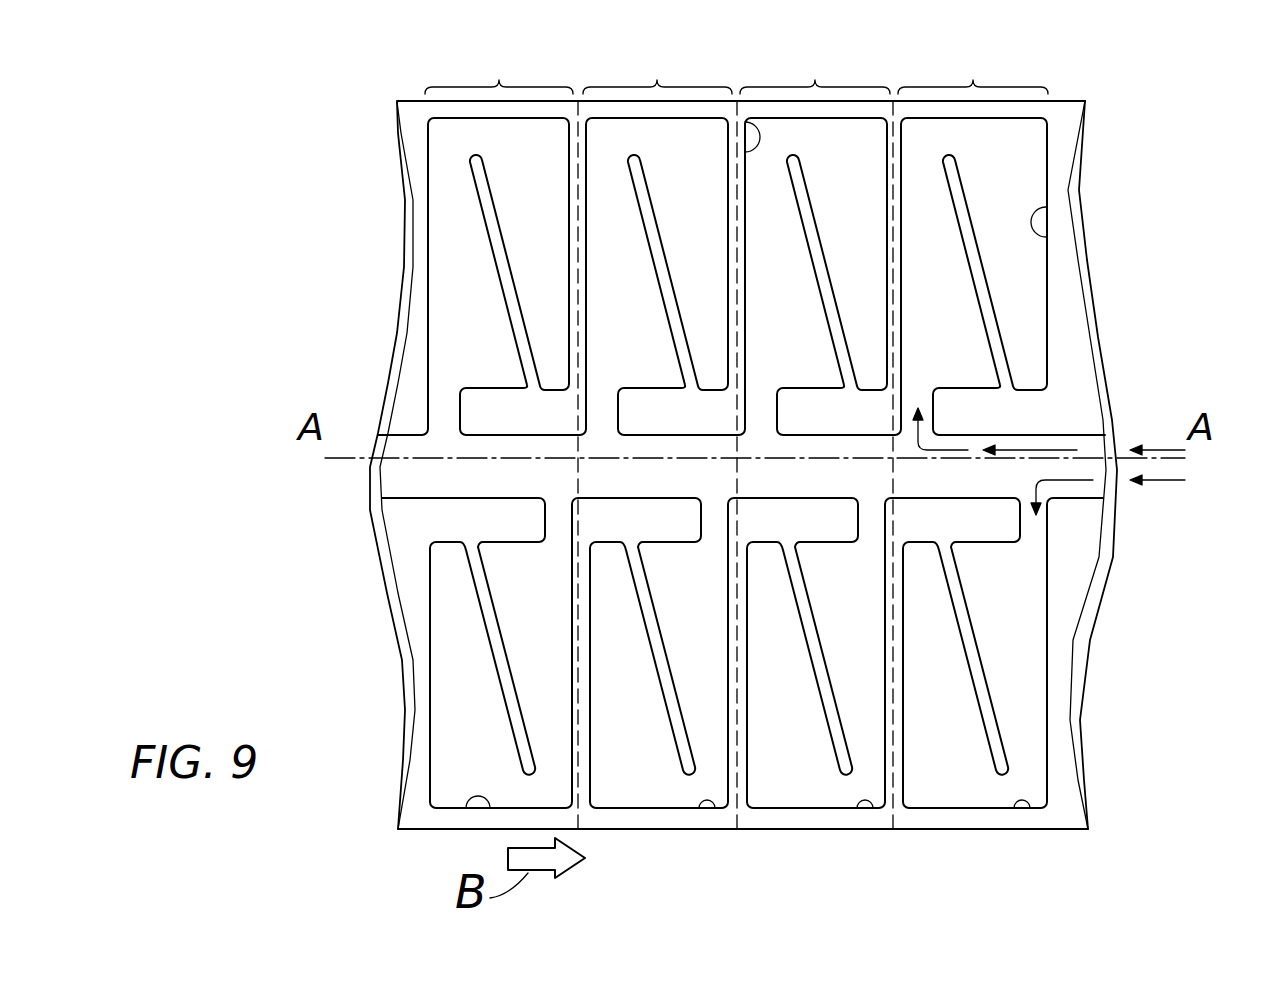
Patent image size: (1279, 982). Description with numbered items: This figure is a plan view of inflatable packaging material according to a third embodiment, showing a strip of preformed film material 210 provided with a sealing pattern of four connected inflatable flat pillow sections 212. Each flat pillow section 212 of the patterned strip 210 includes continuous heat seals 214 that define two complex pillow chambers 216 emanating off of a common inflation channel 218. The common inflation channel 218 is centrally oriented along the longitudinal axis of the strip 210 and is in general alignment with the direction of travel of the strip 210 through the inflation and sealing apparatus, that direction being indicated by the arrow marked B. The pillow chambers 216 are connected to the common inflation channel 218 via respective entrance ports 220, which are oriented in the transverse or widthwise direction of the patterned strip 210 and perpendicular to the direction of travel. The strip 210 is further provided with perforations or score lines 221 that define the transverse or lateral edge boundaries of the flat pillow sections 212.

The strip of preformed film material 210 is at (1115, 160).
The inflatable flat pillow section 212 is at (736, 72).
The continuous heat seal 214 is at (493, 253).
The complex pillow chamber 216 is at (598, 150).
The common inflation channel 218 is at (1093, 447).
The entrance port 220 is at (443, 408).
The perforations or score lines 221 is at (580, 788).